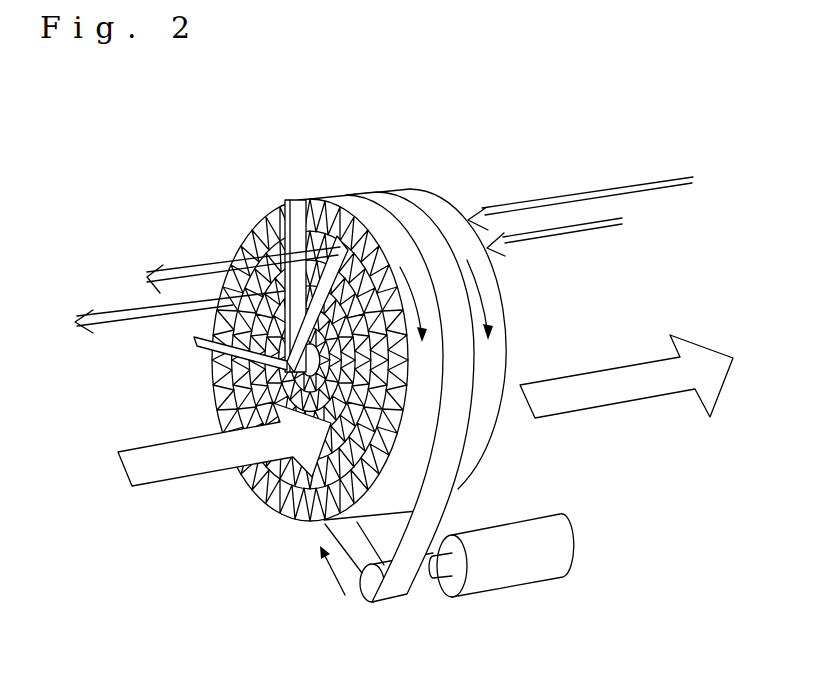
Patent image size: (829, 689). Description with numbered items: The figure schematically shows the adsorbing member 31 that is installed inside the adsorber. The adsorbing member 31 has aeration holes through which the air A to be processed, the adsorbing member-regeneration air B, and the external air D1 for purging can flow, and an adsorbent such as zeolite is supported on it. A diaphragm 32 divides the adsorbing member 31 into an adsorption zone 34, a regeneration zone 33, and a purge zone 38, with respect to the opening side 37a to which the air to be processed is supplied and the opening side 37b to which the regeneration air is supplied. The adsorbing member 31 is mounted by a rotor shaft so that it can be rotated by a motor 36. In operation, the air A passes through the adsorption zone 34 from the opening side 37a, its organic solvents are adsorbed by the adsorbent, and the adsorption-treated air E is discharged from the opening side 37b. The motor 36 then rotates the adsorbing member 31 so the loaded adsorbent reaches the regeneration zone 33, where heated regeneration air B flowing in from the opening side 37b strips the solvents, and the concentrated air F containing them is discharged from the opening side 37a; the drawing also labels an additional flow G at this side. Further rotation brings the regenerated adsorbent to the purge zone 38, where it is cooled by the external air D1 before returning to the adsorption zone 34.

The adsorbing member 31 is at (403, 192).
The diaphragm 32 is at (356, 242).
The regeneration zone 33 is at (250, 210).
The adsorption zone 34 is at (253, 493).
The motor 36 is at (517, 567).
The opening side 37a is at (290, 522).
The opening side 37b is at (487, 459).
The purge zone 38 is at (333, 207).
The air to be processed A is at (213, 447).
The adsorbing member-regeneration air B is at (564, 229).
The external air D1 is at (597, 196).
The adsorption-treated air E is at (638, 376).
The concentrated air F is at (170, 317).
The exhaust flow G is at (231, 273).